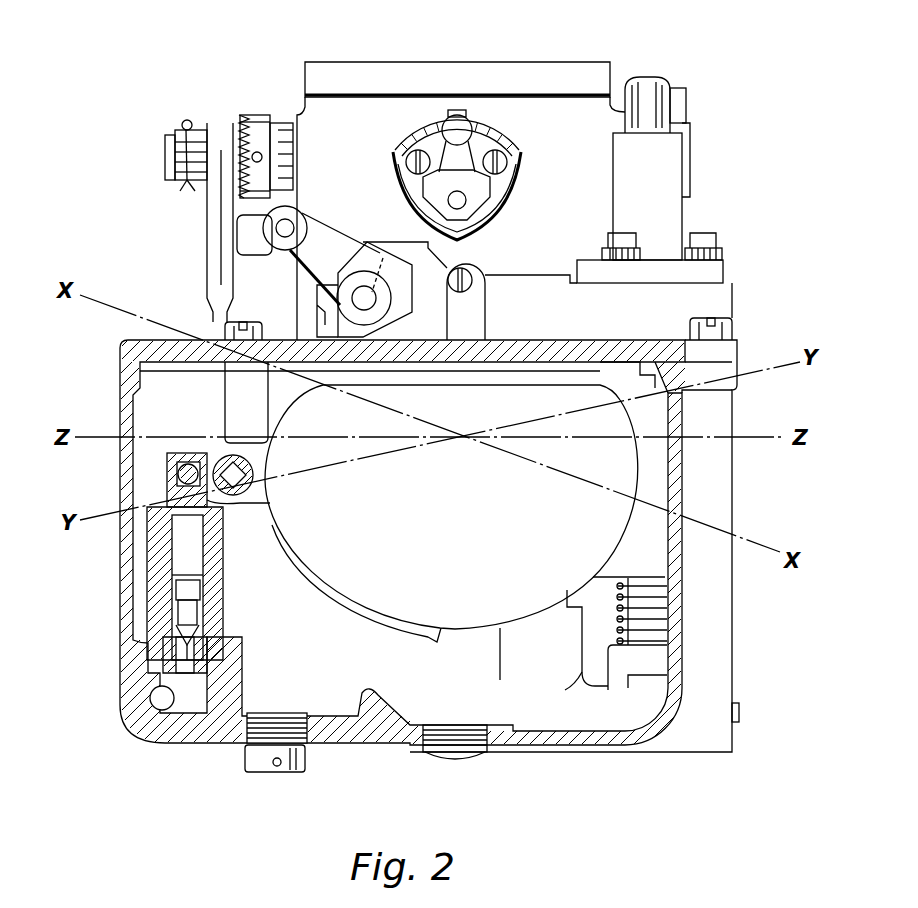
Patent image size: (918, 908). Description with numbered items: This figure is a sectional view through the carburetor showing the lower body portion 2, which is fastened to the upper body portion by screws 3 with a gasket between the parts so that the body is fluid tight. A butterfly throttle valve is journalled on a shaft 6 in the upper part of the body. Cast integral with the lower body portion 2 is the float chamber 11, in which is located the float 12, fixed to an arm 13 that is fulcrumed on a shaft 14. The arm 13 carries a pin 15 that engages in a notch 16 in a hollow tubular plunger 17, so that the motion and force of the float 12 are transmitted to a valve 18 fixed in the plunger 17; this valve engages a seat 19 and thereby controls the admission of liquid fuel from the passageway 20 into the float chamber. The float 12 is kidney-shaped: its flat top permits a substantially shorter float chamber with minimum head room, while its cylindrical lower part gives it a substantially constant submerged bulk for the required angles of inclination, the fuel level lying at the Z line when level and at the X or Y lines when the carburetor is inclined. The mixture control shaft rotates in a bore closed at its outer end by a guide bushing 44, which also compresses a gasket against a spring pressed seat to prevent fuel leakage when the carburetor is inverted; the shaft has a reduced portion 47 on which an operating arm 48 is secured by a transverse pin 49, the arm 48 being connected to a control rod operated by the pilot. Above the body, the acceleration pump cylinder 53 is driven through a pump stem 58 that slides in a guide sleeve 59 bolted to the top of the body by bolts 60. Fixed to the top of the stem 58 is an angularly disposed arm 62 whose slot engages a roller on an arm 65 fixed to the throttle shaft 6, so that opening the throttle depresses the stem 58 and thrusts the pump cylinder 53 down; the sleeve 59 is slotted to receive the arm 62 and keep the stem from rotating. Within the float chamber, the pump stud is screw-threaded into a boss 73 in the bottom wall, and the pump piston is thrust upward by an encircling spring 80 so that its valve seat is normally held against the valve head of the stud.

The lower body portion 2 is at (725, 500).
The screws 3 is at (228, 330).
The shaft 6 is at (165, 158).
The float chamber 11 is at (277, 673).
The float 12 is at (490, 529).
The arm 13 is at (210, 502).
The shaft 14 is at (230, 466).
The pin 15 is at (177, 477).
The notch 16 is at (185, 455).
The hollow tubular plunger 17 is at (168, 556).
The valve 18 is at (188, 612).
The seat 19 is at (165, 650).
The passageway 20 is at (157, 702).
The guide bushing 44 is at (398, 293).
The reduced portion 47 is at (395, 282).
The operating arm 48 is at (318, 259).
The transverse pin 49 is at (383, 258).
The acceleration pump cylinder 53 is at (608, 568).
The pump stem 58 is at (686, 125).
The guide sleeve 59 is at (682, 205).
The bolts 60 is at (740, 236).
The angularly disposed arm 62 is at (650, 84).
The arm 65 is at (682, 98).
The boss 73 is at (612, 660).
The spring 80 is at (620, 620).